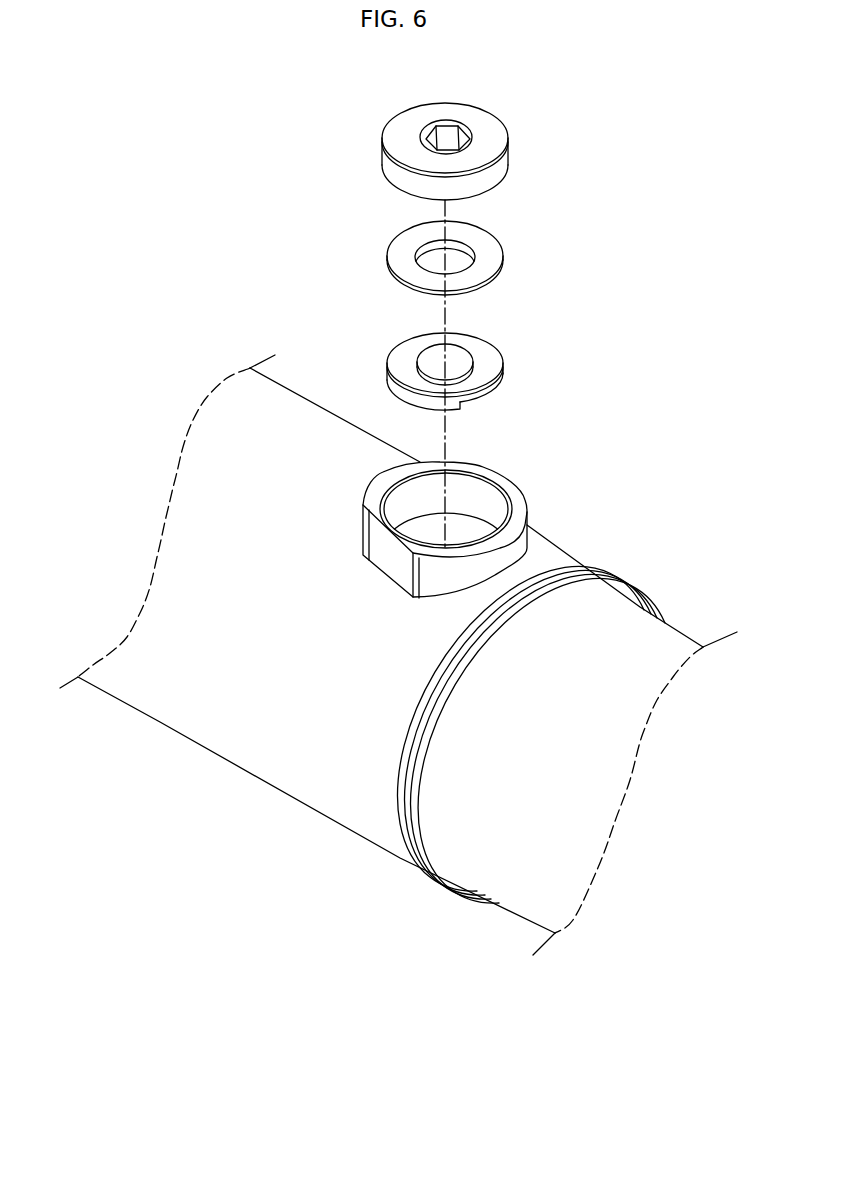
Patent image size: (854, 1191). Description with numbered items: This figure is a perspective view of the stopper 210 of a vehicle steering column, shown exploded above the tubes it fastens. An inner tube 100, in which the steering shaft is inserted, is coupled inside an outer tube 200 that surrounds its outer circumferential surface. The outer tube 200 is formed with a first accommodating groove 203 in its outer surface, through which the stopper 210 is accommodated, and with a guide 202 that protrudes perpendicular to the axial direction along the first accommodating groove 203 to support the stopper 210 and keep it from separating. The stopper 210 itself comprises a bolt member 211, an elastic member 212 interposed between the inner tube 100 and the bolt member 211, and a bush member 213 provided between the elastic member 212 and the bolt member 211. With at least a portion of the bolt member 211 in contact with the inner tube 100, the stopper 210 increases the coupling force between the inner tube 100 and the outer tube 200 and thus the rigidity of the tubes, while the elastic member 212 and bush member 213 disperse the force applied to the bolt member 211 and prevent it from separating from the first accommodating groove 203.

The inner tube 100 is at (530, 895).
The outer tube 200 is at (277, 773).
The guide 202 is at (498, 520).
The first accommodating groove 203 is at (458, 502).
The stopper 210 is at (538, 256).
The bolt member 211 is at (507, 157).
The elastic member 212 is at (504, 257).
The bush member 213 is at (502, 371).